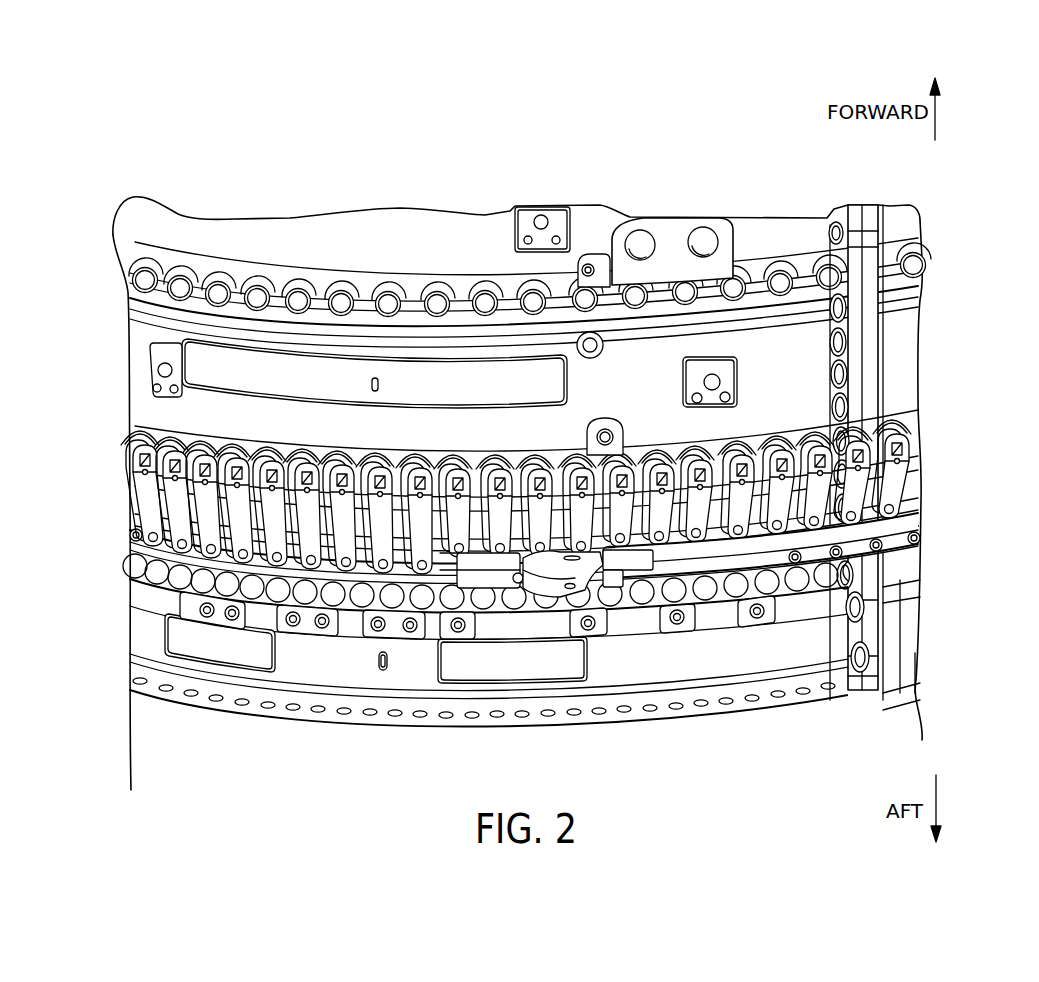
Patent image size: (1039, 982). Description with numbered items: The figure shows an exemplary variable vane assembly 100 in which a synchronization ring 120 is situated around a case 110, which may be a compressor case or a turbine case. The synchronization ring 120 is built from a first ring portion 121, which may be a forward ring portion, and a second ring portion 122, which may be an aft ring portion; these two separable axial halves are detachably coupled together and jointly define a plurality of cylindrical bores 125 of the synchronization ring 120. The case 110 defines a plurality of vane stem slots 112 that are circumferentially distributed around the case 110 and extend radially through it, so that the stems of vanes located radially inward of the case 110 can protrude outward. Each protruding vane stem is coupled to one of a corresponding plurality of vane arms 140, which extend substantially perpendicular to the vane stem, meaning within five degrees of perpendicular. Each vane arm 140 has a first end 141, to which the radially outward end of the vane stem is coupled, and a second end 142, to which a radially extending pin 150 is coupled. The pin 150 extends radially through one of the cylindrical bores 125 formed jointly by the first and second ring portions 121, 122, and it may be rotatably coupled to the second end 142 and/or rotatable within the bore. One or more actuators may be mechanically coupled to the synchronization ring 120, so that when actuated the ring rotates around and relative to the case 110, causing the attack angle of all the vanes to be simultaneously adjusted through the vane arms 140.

The variable vane assembly 100 is at (166, 104).
The case 110 is at (318, 236).
The vane stem slots 112 is at (465, 452).
The synchronization ring 120 is at (932, 528).
The first ring portion 121 is at (145, 512).
The second ring portion 122 is at (140, 572).
The cylindrical bores 125 is at (131, 535).
The vane arms 140 is at (298, 420).
The first end 141 is at (140, 447).
The second end 142 is at (180, 582).
The pin 150 is at (385, 578).